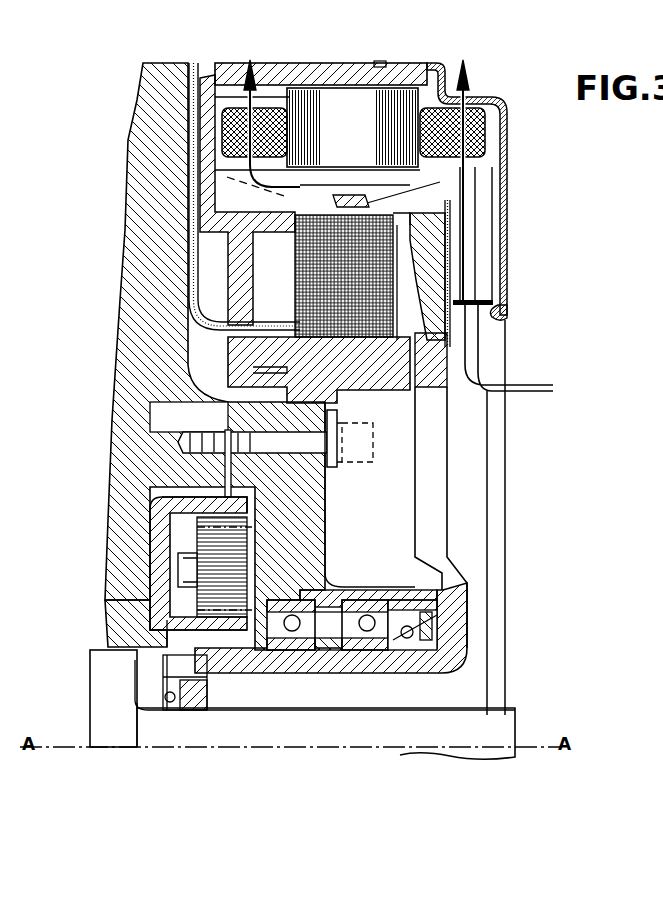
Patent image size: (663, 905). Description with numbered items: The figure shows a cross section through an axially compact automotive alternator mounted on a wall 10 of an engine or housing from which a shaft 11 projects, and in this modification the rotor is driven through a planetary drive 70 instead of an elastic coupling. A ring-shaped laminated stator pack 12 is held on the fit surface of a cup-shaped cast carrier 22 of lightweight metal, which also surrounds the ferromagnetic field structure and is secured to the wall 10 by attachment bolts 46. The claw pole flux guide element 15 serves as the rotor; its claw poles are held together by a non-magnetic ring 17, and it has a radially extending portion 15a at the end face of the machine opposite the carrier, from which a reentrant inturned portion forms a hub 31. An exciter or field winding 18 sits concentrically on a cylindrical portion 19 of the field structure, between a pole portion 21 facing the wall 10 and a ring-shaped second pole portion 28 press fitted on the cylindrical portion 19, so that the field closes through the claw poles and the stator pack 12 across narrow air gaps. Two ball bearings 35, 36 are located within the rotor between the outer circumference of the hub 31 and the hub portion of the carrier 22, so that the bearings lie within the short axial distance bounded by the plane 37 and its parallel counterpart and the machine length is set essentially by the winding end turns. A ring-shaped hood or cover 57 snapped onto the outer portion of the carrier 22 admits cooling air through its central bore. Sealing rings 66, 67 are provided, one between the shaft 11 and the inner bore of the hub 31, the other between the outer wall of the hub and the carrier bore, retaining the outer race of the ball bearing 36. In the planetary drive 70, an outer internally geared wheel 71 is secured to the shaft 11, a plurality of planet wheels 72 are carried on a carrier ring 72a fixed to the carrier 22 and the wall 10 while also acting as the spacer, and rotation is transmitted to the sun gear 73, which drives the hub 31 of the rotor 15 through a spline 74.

The wall 10 is at (155, 225).
The shaft 11 is at (497, 723).
The laminated stator pack 12 is at (378, 125).
The claw pole flux guide element 15 is at (432, 245).
The radially extending portion 15a is at (430, 270).
The ring 17 is at (377, 197).
The exciter or field winding 18 is at (508, 313).
The cylindrical portion 19 is at (375, 353).
The pole half or pole portion 21 is at (265, 292).
The cast carrier 22 is at (215, 232).
The second pole half or pole portion 28 is at (408, 292).
The hub 31 is at (435, 658).
The ball bearing 35 is at (290, 640).
The ball bearing 36 is at (367, 643).
The plane 37 is at (222, 130).
The attachment bolts 46 is at (130, 448).
The ring-shaped hood or cover 57 is at (508, 100).
The sealing ring 66 is at (137, 718).
The sealing ring 67 is at (398, 645).
The planetary drive 70 is at (135, 552).
The outer internally geared wheel 71 is at (240, 494).
The planet wheels 72 is at (210, 569).
The carrier ring 72a is at (240, 478).
The sun gear 73 is at (115, 626).
The spline 74 is at (165, 662).